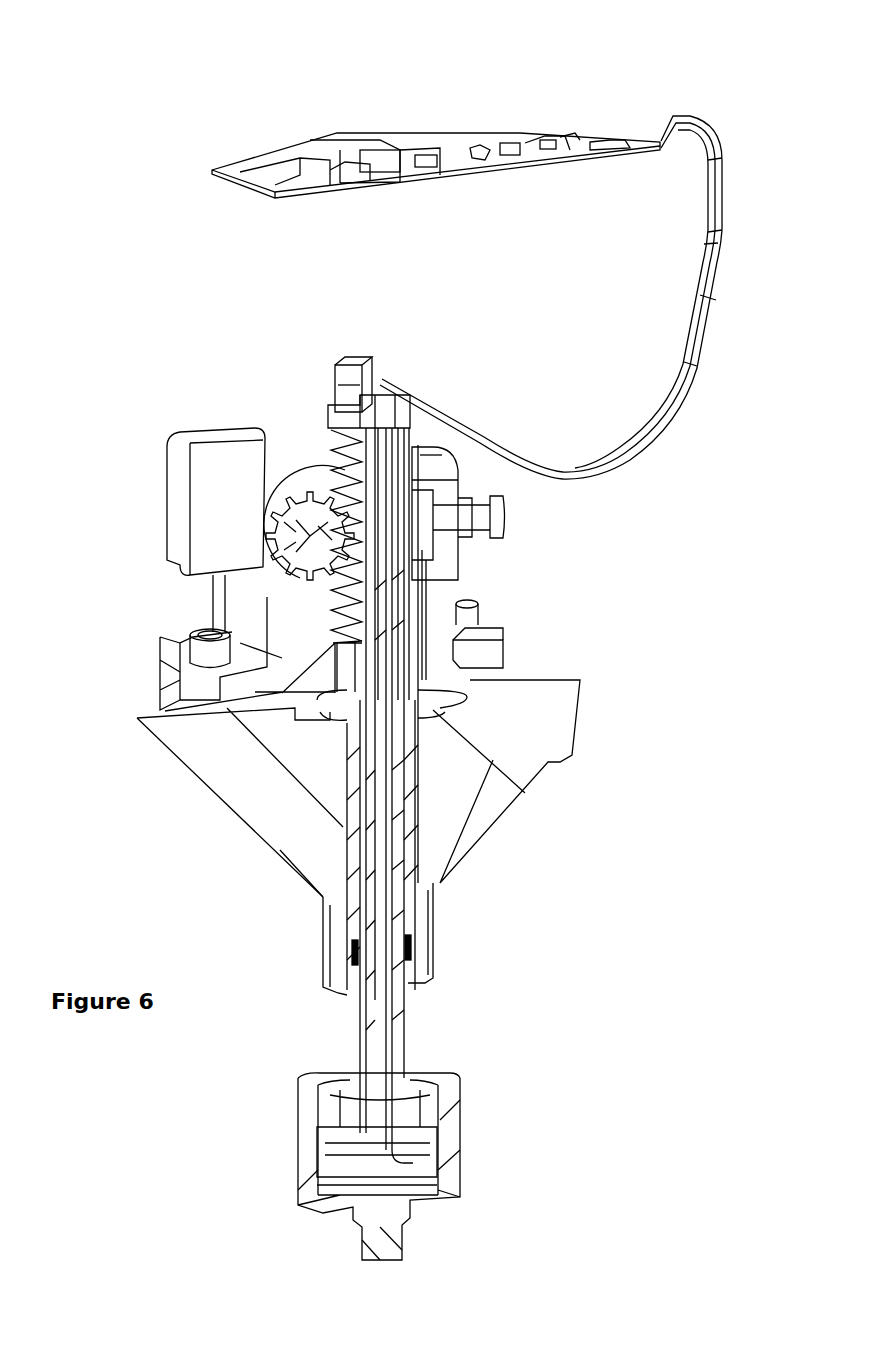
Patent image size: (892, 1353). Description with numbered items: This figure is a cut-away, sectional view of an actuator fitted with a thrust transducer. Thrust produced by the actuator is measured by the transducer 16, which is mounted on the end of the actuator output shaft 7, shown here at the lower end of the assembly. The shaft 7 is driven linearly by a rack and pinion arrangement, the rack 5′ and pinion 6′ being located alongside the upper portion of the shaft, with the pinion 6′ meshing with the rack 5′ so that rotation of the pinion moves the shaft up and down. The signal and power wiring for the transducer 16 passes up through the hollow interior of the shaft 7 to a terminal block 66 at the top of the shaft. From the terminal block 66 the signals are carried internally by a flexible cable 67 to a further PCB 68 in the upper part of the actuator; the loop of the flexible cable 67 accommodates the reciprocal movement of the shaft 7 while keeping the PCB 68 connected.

The PCB 68 is at (448, 148).
The flexible cable 67 is at (628, 461).
The terminal block 66 is at (347, 356).
The pinion 6′ is at (330, 532).
The rack 5′ is at (332, 597).
The actuator output shaft 7 is at (407, 1018).
The transducer 16 is at (460, 1143).